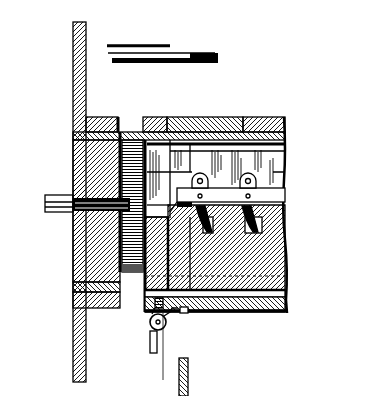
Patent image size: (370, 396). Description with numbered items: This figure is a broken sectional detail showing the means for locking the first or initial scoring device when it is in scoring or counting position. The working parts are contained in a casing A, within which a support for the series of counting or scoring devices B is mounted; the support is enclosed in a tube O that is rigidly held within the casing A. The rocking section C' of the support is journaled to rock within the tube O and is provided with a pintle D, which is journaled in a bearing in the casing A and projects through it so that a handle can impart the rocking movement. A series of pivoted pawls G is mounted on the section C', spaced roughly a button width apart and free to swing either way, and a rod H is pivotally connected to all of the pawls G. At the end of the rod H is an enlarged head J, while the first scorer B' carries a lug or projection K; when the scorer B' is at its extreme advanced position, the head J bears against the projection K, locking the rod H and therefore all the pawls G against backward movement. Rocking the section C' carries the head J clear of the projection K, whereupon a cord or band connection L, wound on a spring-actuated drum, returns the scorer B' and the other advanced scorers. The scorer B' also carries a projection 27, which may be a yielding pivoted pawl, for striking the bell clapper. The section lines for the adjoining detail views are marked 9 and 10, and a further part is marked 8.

The casing A is at (73, 43).
The plate 8 is at (233, 32).
The tube O is at (122, 132).
The first scoring device B' is at (144, 110).
The section line 9 is at (168, 104).
The scoring devices B is at (226, 108).
The support section C' is at (233, 215).
The pin / section line 10 is at (35, 215).
The pivoted pawls G is at (204, 178).
The rod H is at (285, 198).
The pintle D is at (73, 217).
The head J is at (200, 207).
The projection K is at (140, 274).
The connection L is at (288, 300).
The projection 27 is at (155, 335).